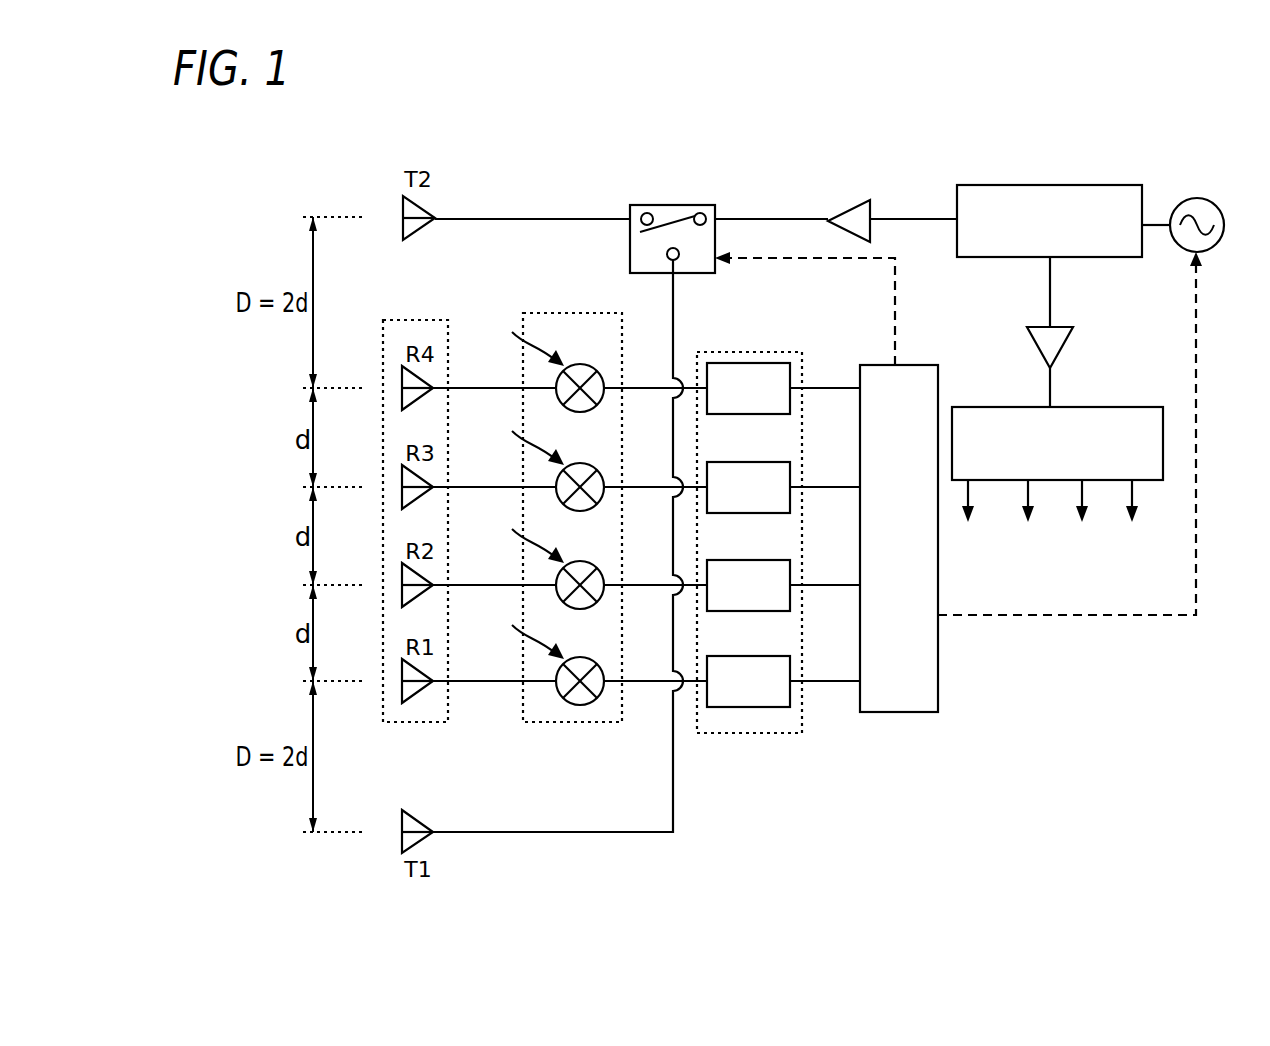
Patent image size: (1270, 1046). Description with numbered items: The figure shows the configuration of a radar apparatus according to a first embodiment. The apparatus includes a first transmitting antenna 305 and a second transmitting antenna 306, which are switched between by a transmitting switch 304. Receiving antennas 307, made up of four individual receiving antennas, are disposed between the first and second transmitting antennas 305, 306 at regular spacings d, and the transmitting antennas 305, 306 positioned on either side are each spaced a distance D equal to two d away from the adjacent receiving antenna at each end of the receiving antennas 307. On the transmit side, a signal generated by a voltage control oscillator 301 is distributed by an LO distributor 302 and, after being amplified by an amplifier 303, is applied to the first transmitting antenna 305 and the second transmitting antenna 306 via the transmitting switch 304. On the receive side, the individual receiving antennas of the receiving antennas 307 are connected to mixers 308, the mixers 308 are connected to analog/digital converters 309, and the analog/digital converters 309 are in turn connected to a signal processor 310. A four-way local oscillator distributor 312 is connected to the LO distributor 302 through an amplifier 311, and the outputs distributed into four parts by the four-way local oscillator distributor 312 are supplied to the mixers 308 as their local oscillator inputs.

The voltage control oscillator 301 is at (1212, 205).
The LO distributor 302 is at (1050, 185).
The amplifier 303 is at (853, 200).
The transmitting switch 304 is at (690, 205).
The first transmitting antenna 305 is at (430, 836).
The second transmitting antenna 306 is at (436, 217).
The receiving antennas 307 is at (415, 722).
The mixers 308 is at (565, 722).
The analog/digital converters 309 is at (775, 733).
The signal processor 310 is at (900, 712).
The amplifier 311 is at (1065, 345).
The LO 4 distributor 312 is at (1005, 407).